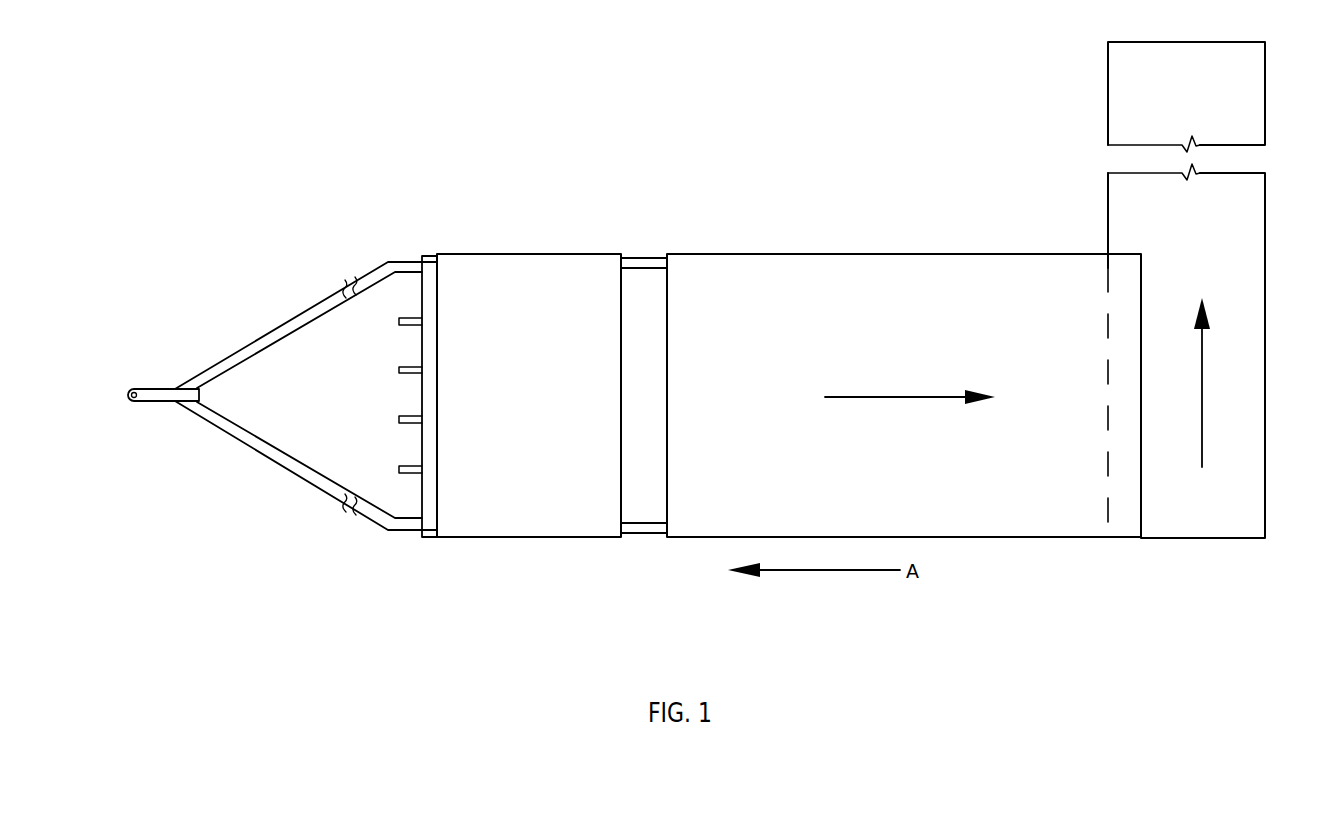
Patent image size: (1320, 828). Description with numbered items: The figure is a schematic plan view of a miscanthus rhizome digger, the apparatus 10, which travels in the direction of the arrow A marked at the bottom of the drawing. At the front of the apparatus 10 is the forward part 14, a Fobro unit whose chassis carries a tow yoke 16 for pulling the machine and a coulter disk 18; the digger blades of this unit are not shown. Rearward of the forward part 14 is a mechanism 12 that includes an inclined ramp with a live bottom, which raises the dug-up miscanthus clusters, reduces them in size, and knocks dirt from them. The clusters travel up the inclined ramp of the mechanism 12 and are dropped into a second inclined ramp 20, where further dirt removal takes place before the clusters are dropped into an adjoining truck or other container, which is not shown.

The apparatus 10 is at (820, 185).
The mechanism with inclined ramp 12 is at (694, 262).
The forward part 14 is at (545, 262).
The tow yoke 16 is at (388, 263).
The coulter disk 18 is at (430, 293).
The second inclined ramp 20 is at (1118, 223).